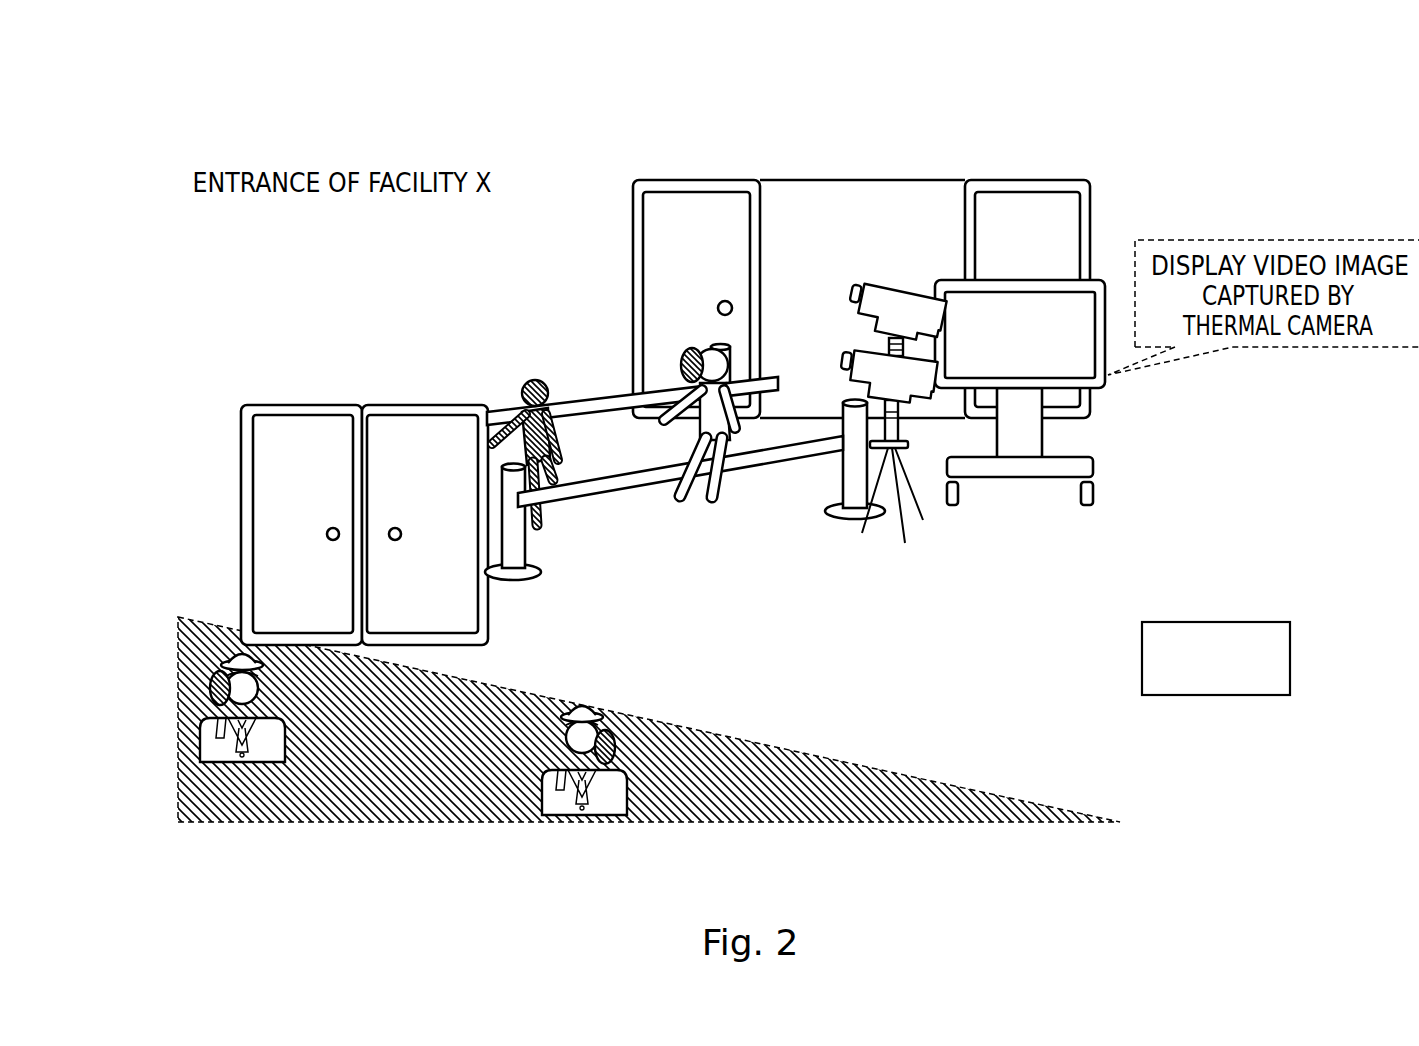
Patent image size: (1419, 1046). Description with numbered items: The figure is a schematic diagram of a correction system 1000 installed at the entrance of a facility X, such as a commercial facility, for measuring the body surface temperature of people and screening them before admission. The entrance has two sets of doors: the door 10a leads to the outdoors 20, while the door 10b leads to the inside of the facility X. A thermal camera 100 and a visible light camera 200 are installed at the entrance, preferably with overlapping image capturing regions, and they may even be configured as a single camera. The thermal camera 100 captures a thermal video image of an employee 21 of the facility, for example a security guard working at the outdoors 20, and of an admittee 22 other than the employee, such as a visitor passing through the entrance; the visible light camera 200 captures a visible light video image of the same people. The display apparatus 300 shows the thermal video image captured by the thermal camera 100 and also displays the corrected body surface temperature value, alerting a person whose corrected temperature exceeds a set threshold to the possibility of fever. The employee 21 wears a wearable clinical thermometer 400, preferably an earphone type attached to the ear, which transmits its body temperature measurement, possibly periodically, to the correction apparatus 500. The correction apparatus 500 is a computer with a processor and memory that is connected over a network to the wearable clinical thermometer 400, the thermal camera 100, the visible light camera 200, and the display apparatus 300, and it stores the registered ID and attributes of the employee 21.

The correction system 1000 is at (198, 69).
The door 10a is at (302, 427).
The door 10b is at (686, 205).
The outdoors 20 is at (815, 805).
The employee 21 is at (708, 352).
The admittee 22 is at (522, 388).
The thermal camera 100 is at (877, 288).
The visible light camera 200 is at (870, 352).
The display apparatus 300 is at (1030, 278).
The wearable clinical thermometer 400 is at (682, 357).
The correction apparatus 500 is at (1268, 620).